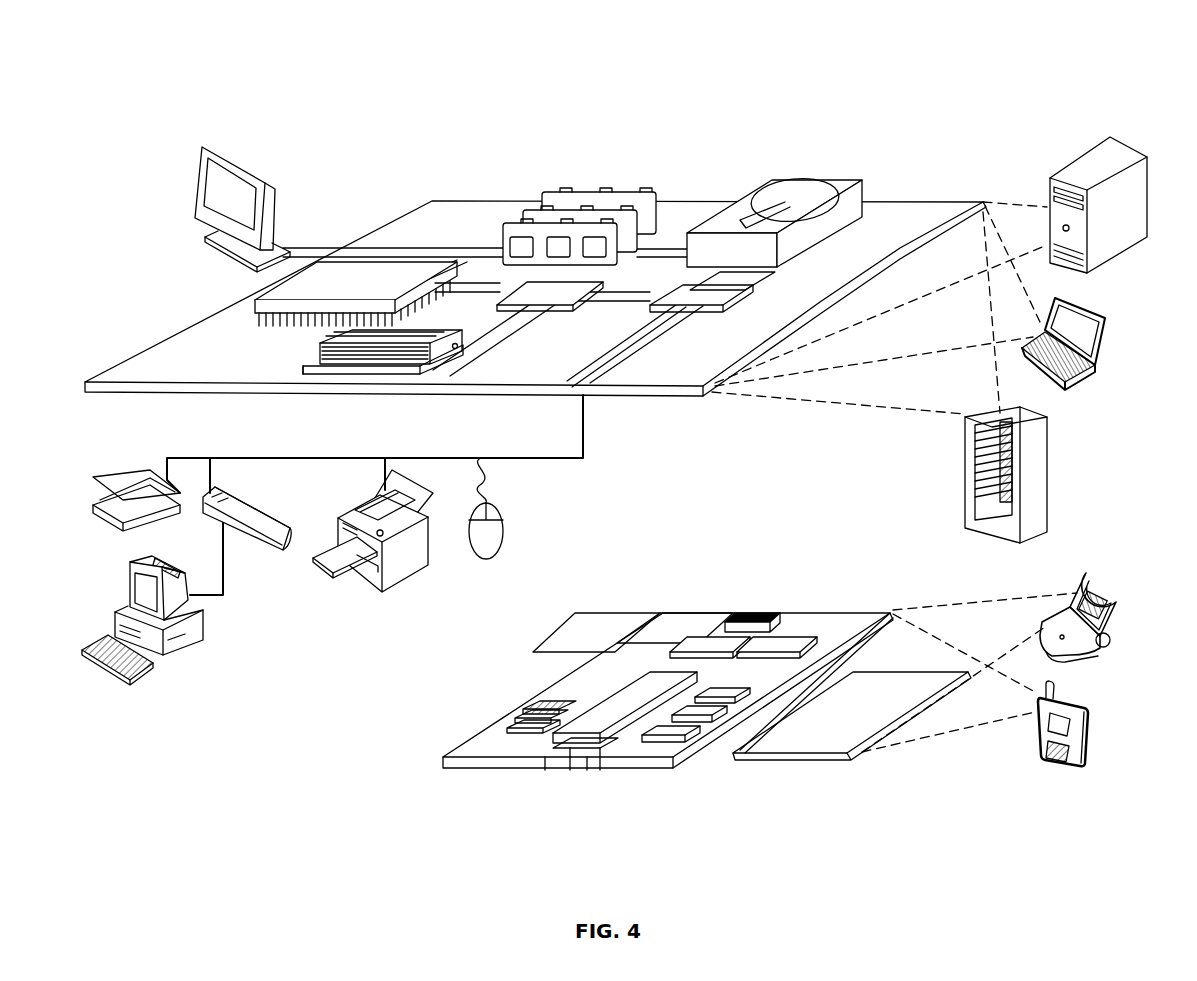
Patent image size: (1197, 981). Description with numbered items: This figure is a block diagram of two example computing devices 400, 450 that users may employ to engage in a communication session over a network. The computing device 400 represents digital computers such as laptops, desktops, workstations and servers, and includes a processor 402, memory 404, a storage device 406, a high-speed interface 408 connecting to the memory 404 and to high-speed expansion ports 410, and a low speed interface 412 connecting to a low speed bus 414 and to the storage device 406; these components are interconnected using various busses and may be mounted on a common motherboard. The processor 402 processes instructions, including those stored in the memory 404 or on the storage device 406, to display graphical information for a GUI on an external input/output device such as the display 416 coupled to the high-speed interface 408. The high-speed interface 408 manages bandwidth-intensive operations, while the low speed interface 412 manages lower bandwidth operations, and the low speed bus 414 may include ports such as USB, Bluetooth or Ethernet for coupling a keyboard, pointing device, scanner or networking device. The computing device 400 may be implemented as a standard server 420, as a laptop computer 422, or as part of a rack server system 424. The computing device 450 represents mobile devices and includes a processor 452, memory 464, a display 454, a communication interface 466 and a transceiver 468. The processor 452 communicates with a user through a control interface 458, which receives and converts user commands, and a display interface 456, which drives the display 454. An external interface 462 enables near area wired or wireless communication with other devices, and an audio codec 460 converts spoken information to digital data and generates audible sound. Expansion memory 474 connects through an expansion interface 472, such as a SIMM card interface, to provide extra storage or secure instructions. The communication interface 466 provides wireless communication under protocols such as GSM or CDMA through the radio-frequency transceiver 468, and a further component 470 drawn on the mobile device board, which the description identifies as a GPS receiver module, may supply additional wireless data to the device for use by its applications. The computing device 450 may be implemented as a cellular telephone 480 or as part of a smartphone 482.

The computing device 400 is at (133, 42).
The processor 402 is at (254, 301).
The memory 404 is at (549, 195).
The storage device 406 is at (760, 186).
The high-speed interface 408 is at (470, 252).
The high-speed expansion ports 410 is at (305, 357).
The low speed interface 412 is at (680, 290).
The low speed bus 414 is at (588, 388).
The display 416 is at (201, 147).
The standard server 420 is at (1049, 190).
The laptop computer 422 is at (1105, 322).
The rack server system 424 is at (968, 492).
The computing device 450 is at (416, 772).
The processor 452 is at (590, 770).
The display 454 is at (838, 757).
The display interface 456 is at (672, 744).
The control interface 458 is at (702, 724).
The audio codec 460 is at (730, 705).
The external interface 462 is at (562, 769).
The memory 464 is at (521, 720).
The communication interface 466 is at (700, 643).
The transceiver 468 is at (788, 641).
The processor chip 470 is at (745, 613).
The expansion interface 472 is at (648, 624).
The expansion memory 474 is at (576, 624).
The cellular telephone 480 is at (1088, 573).
The smartphone 482 is at (1041, 735).